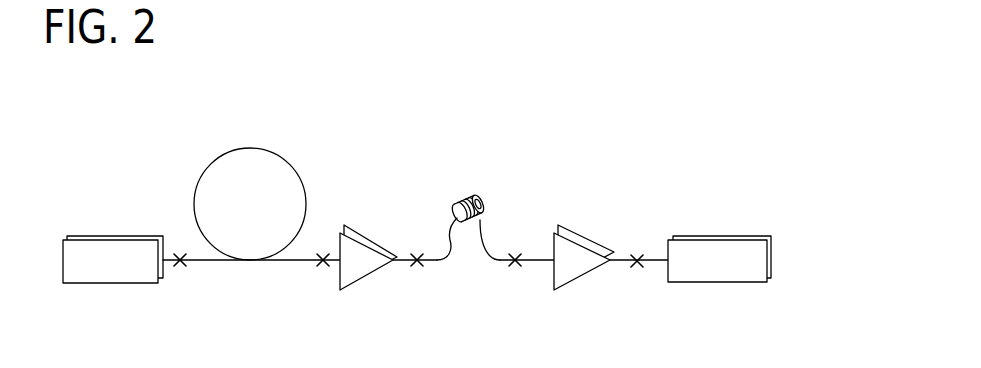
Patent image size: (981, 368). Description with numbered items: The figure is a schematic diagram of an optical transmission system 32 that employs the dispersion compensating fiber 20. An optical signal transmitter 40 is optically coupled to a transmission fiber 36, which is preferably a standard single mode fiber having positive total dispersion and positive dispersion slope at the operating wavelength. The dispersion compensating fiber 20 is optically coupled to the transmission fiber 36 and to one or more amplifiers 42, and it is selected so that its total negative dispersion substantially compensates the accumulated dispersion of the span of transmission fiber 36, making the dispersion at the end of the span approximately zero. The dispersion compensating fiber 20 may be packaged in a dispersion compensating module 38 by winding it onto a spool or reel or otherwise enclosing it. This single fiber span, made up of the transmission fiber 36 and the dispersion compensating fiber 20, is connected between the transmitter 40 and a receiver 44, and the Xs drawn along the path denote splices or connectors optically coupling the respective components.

The dispersion compensating fiber 20 is at (462, 194).
The optical transmission system 32 is at (468, 108).
The transmission fiber 36 is at (309, 163).
The dispersion compensating module 38 is at (507, 201).
The optical signal transmitter 40 is at (83, 238).
The amplifier 42 is at (370, 238).
The receiver 44 is at (757, 237).